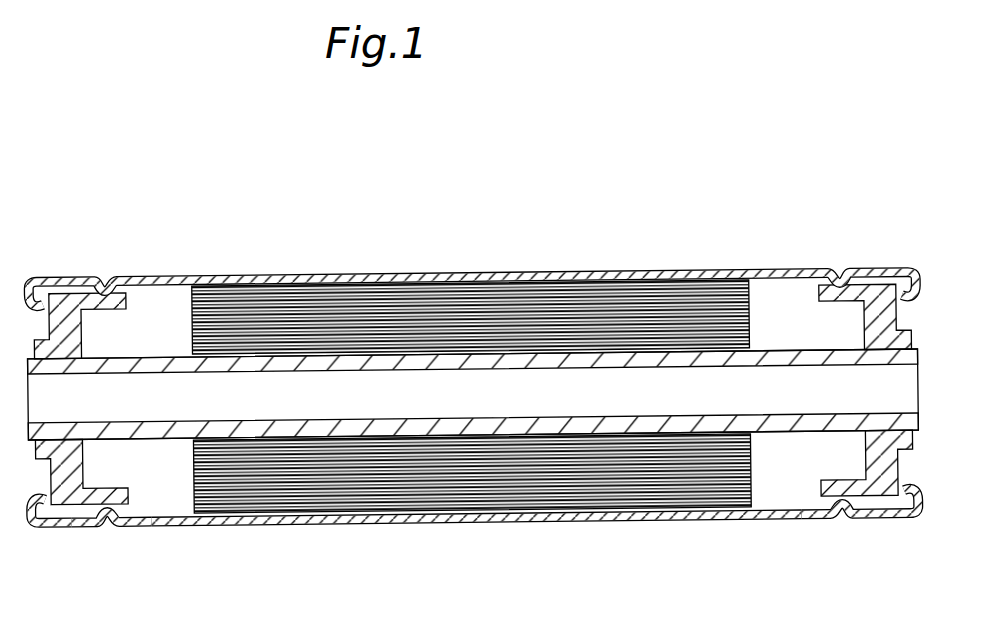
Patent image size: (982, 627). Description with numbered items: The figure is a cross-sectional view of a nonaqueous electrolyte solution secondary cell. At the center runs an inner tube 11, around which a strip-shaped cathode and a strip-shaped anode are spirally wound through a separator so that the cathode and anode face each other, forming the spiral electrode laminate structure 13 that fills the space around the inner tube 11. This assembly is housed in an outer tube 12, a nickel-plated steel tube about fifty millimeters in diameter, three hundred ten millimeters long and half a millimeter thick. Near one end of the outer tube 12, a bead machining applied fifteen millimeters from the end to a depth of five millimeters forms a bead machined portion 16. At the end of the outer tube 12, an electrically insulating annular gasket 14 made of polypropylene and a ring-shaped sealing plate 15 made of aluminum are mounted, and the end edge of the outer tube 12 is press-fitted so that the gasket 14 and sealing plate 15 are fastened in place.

The inner tube 11 is at (157, 358).
The outer tube 12 is at (380, 273).
The spiral electrode laminate structure 13 is at (571, 312).
The electrically insulating annular gasket 14 is at (63, 517).
The ring-shaped sealing plate 15 is at (90, 527).
The bead machined portion 16 is at (840, 517).